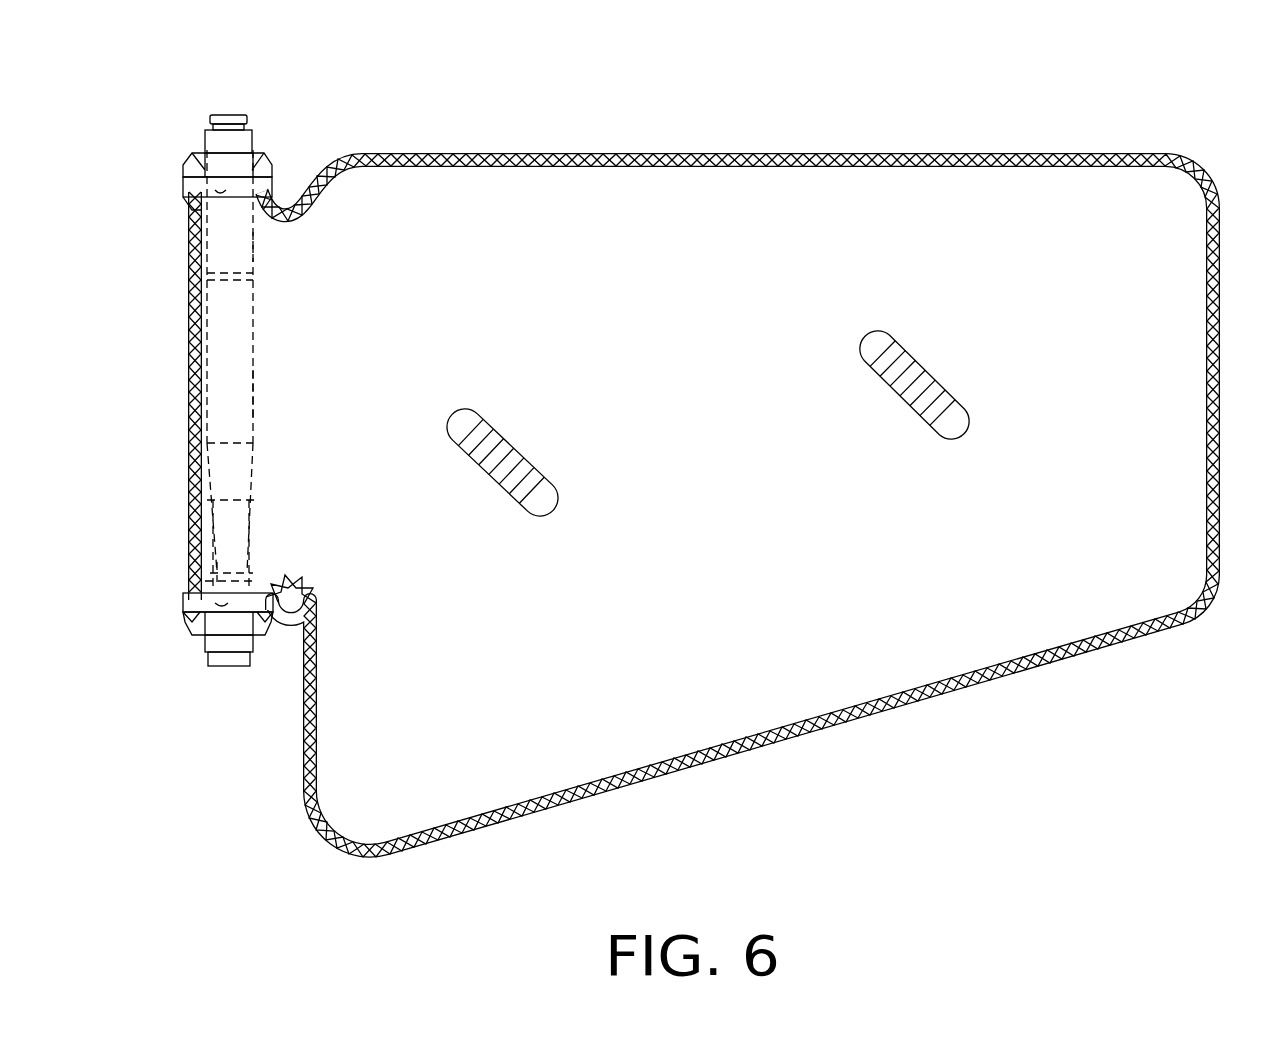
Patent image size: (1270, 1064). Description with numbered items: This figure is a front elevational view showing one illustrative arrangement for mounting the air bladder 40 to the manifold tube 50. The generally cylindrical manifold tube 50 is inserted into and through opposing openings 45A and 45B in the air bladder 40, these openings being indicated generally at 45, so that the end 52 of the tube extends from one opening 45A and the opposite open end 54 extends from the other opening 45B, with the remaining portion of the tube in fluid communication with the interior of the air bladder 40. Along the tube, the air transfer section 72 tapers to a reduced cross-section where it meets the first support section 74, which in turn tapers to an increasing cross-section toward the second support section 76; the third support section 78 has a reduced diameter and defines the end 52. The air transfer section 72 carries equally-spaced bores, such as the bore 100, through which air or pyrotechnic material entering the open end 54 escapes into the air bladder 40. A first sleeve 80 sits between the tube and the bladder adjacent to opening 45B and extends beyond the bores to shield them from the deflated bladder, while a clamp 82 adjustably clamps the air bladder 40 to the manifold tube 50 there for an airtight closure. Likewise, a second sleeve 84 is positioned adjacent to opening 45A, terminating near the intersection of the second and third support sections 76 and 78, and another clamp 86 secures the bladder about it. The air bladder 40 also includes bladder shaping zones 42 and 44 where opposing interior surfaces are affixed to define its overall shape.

The air bladder 40 is at (785, 546).
The bladder shaping zone 42 is at (488, 430).
The bladder shaping zone 44 is at (884, 336).
The tank wall 45 is at (190, 356).
The opening 45A is at (258, 162).
The opening 45B is at (268, 628).
The manifold tube 50 is at (266, 338).
The end of manifold tube 52 is at (228, 114).
The open end 54 is at (225, 667).
The air transfer section 72 is at (255, 578).
The first support section 74 is at (256, 460).
The second support section 76 is at (256, 397).
The third support section 78 is at (256, 279).
The first sleeve 80 is at (258, 525).
The clamp 82 is at (222, 616).
The second sleeve 84 is at (256, 246).
The clamp 86 is at (222, 192).
The bore 100 is at (224, 572).